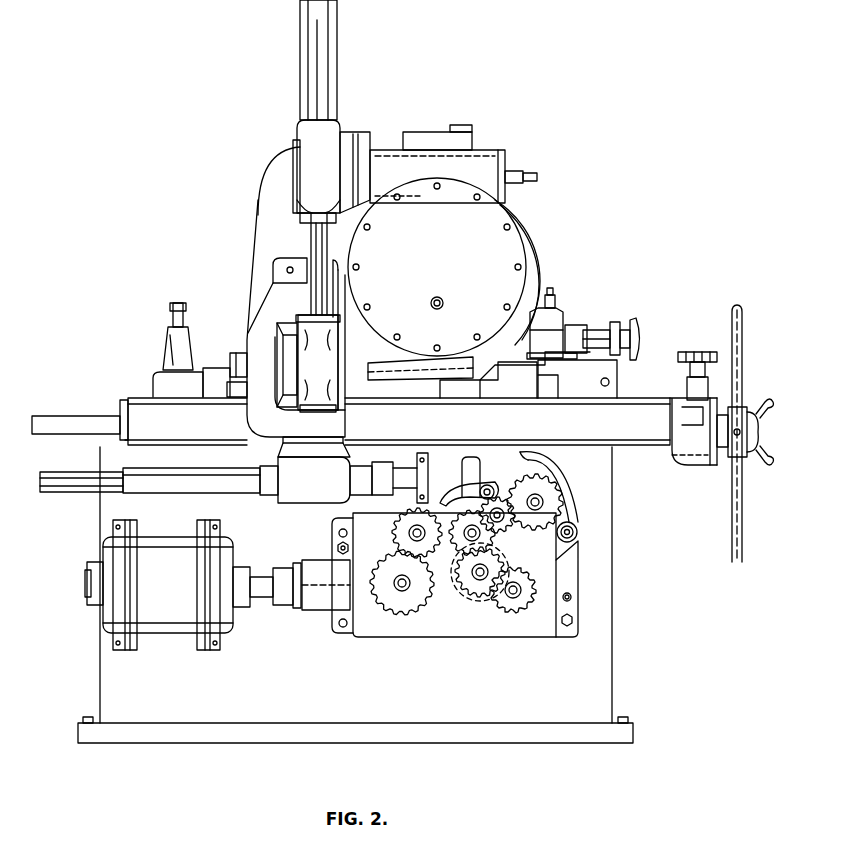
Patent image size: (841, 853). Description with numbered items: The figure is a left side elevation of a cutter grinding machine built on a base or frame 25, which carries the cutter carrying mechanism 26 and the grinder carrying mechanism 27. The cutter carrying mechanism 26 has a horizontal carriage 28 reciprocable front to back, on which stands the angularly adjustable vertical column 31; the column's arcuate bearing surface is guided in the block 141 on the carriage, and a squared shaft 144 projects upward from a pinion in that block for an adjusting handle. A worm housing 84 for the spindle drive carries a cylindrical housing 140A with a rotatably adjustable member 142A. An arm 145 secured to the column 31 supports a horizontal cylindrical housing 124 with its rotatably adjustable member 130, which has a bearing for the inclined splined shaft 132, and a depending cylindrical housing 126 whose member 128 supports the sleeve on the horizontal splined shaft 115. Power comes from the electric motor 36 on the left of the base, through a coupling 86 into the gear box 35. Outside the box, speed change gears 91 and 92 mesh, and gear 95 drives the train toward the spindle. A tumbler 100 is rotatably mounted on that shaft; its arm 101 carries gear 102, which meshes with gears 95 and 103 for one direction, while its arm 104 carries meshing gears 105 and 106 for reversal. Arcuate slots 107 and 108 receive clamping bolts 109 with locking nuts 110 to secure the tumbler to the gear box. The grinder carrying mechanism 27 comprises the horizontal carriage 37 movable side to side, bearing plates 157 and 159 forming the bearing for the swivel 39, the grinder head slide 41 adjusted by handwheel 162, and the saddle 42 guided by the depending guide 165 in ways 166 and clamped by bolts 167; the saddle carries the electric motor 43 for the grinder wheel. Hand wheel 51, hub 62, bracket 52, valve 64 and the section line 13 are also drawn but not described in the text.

The rotatably adjustable member 142A is at (328, 131).
The cylindrical housing 140A is at (370, 147).
The housing for the worm wheel mechanism 84 is at (488, 160).
The angularly adjustable vertical column 31 is at (278, 178).
The cutter carrying mechanism 26 is at (232, 292).
The shaft 132 is at (310, 232).
The rotatably adjustable member 130 is at (322, 374).
The cylindrical housing 124 is at (288, 378).
The arm 145 is at (262, 352).
The squared shaft 144 is at (177, 316).
The block 141 is at (163, 380).
The horizontal carriage 28 is at (628, 436).
The cylindrical housing 126 is at (212, 434).
The electric motor 43 is at (523, 222).
The ways 166 is at (530, 333).
The clamping bolts 167 is at (550, 287).
The bearing plate 157 is at (552, 346).
The bearing plate 159 is at (520, 370).
The horizontal carriage 37 is at (612, 377).
The swivel 39 is at (600, 331).
The handwheel 162 is at (638, 332).
The grinder head slide 41 is at (563, 333).
The saddle 42 is at (545, 316).
The depending guide 165 is at (532, 322).
The grinder carrying mechanism 27 is at (563, 287).
The valve 64 is at (697, 355).
The bracket 52 is at (721, 450).
The hub with wing nut 62 is at (760, 430).
The hand wheel 51 is at (742, 340).
The base or frame 25 is at (602, 684).
The electric motor 36 is at (116, 586).
The coupling 86 is at (283, 575).
The member 128 is at (302, 490).
The horizontal splined shaft 115 is at (414, 483).
The section line 13 is at (472, 530).
The arcuate slot 107 is at (441, 490).
The locking nuts 110 is at (489, 486).
The clamping bolts 109 is at (492, 460).
The arm 104 is at (545, 455).
The arcuate slot 108 is at (571, 524).
The gear box 35 is at (580, 592).
The tumbler 100 is at (408, 522).
The gear 95 is at (460, 545).
The gear 92 is at (400, 546).
The gear 91 is at (410, 598).
The gear 102 is at (480, 598).
The gear 105 is at (499, 527).
The gear 106 is at (550, 495).
The arm 101 is at (505, 566).
The gear 103 is at (518, 598).